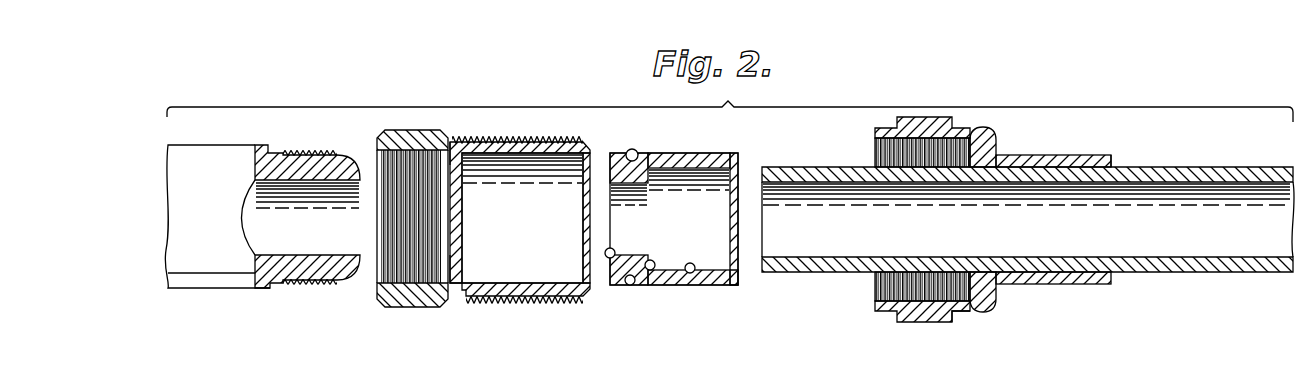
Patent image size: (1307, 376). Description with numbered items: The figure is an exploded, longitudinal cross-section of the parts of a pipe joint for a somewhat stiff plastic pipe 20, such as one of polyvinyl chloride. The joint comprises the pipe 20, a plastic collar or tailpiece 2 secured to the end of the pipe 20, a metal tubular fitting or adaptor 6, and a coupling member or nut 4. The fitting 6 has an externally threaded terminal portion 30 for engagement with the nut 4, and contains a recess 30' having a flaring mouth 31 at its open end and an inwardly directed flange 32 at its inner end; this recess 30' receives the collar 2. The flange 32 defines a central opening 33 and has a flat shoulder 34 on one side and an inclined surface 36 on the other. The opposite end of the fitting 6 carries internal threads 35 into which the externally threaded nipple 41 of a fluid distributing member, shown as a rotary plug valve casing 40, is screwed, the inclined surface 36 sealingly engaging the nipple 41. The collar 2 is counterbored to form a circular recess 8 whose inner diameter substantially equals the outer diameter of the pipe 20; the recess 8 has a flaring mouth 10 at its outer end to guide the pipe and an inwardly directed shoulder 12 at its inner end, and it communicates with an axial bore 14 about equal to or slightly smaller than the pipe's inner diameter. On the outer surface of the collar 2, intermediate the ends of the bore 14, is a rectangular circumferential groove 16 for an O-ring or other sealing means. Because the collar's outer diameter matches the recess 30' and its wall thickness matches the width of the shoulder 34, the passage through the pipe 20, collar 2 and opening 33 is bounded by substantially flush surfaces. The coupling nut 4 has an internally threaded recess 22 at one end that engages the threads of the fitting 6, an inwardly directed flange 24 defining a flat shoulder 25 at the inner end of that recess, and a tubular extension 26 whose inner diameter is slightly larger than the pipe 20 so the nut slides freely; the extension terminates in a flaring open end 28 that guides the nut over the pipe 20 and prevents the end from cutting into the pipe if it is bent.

The collar 2 is at (701, 140).
The coupling nut 4 is at (1006, 130).
The tubular fitting 6 is at (408, 316).
The circular recess 8 is at (690, 274).
The flaring mouth 10 is at (738, 284).
The shoulder 12 is at (651, 270).
The axial bore 14 is at (608, 254).
The circumferential groove 16 is at (630, 286).
The plastic pipe 20 is at (1173, 278).
The internally threaded recess 22 is at (878, 291).
The flange 24 is at (980, 292).
The shoulder 25 is at (957, 316).
The tubular extension 26 is at (1047, 158).
The flaring open end 28 is at (1114, 163).
The terminal portion 30 is at (520, 206).
The recess 30' is at (522, 181).
The flaring mouth 31 is at (590, 282).
The flange 32 is at (452, 162).
The central opening 33 is at (452, 268).
The shoulder 34 is at (472, 303).
The internal threads 35 is at (380, 158).
The inclined surface 36 is at (448, 262).
The rotary plug valve casing 40 is at (284, 306).
The externally threaded nipple 41 is at (293, 273).